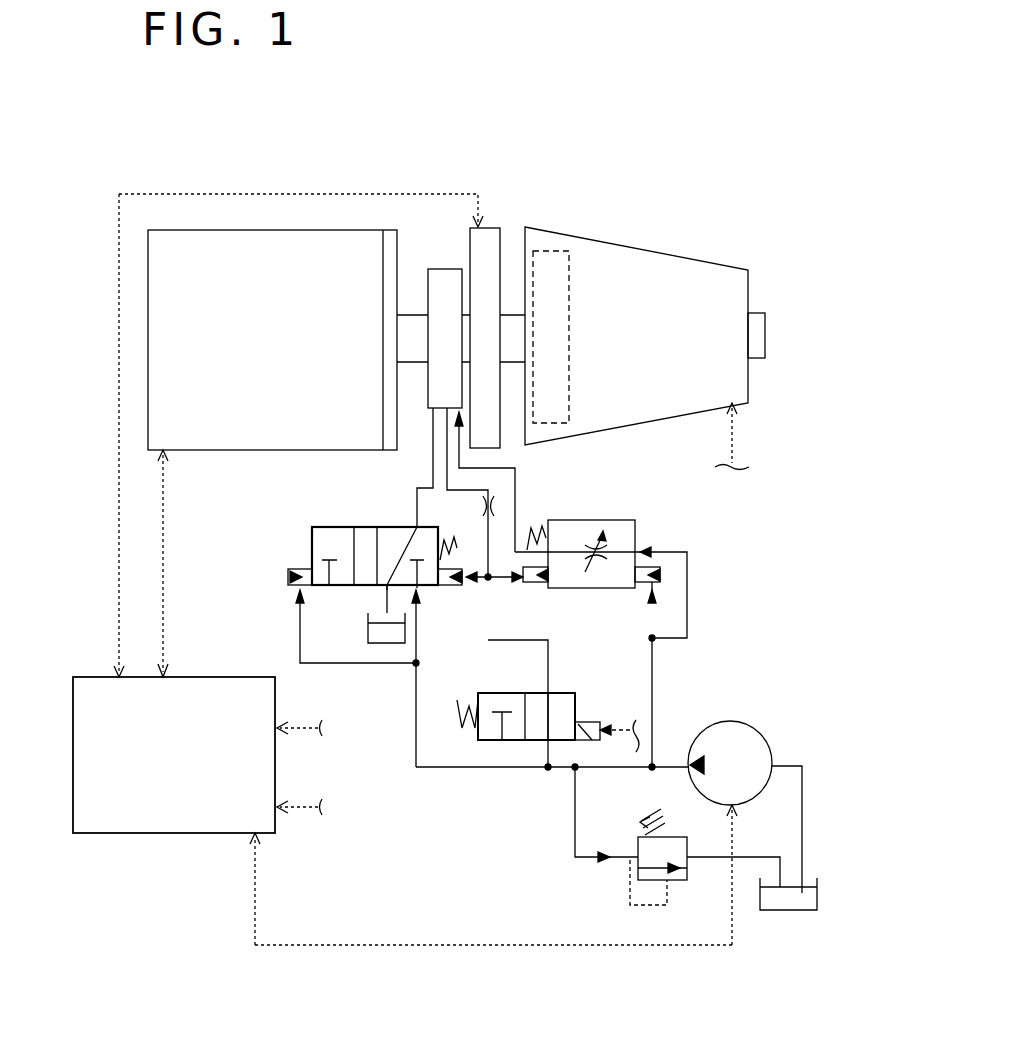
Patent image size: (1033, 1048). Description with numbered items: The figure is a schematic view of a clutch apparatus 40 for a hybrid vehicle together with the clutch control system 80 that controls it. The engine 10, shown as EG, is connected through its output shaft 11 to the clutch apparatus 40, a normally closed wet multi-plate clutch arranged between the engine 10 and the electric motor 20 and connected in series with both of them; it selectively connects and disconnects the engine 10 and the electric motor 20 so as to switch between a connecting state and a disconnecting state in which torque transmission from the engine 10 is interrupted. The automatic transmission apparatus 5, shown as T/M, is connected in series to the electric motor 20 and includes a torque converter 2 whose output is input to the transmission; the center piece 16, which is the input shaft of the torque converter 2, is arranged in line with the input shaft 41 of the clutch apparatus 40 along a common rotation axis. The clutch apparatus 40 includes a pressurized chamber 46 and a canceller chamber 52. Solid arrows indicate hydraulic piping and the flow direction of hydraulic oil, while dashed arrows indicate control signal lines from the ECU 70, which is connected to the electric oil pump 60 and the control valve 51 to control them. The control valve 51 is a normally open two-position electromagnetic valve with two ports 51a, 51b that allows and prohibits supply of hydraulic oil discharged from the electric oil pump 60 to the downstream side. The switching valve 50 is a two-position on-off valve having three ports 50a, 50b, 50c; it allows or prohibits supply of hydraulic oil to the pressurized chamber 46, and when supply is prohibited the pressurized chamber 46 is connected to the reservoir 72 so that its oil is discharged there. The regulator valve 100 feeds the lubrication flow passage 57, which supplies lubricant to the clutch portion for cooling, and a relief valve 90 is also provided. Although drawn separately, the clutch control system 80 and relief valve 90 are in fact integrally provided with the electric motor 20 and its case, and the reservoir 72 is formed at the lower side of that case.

The torque converter 2 is at (566, 250).
The automatic transmission apparatus 5 is at (640, 262).
The engine 10 is at (282, 243).
The output shaft 11 is at (408, 338).
The center piece 16 is at (515, 330).
The electric motor 20 is at (492, 243).
The clutch apparatus 40 is at (452, 257).
The input shaft 41 is at (420, 327).
The pressurized chamber 46 is at (428, 409).
The switching valve 50 is at (313, 525).
The port 50a is at (415, 527).
The port 50b is at (387, 585).
The port 50c is at (418, 587).
The control valve 51 is at (548, 720).
The port 51a is at (543, 740).
The port 51b is at (548, 693).
The canceller chamber 52 is at (433, 410).
The lubrication flow passage 57 is at (462, 400).
The electric oil pump 60 is at (745, 730).
The ECU 70 is at (80, 702).
The reservoir 72 is at (368, 634).
The clutch control system 80 is at (728, 627).
The relief valve 90 is at (673, 880).
The regulator valve 100 is at (615, 520).